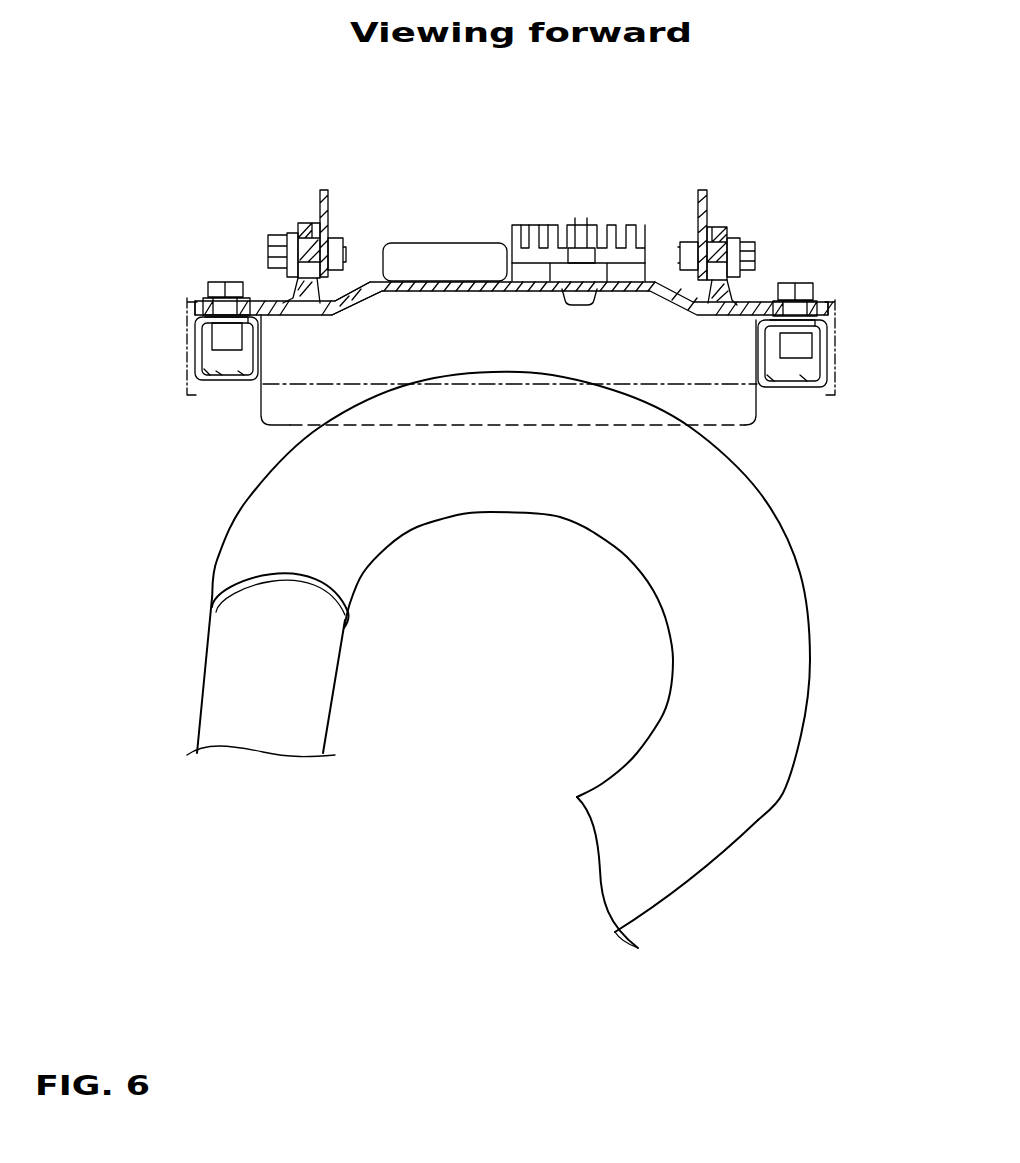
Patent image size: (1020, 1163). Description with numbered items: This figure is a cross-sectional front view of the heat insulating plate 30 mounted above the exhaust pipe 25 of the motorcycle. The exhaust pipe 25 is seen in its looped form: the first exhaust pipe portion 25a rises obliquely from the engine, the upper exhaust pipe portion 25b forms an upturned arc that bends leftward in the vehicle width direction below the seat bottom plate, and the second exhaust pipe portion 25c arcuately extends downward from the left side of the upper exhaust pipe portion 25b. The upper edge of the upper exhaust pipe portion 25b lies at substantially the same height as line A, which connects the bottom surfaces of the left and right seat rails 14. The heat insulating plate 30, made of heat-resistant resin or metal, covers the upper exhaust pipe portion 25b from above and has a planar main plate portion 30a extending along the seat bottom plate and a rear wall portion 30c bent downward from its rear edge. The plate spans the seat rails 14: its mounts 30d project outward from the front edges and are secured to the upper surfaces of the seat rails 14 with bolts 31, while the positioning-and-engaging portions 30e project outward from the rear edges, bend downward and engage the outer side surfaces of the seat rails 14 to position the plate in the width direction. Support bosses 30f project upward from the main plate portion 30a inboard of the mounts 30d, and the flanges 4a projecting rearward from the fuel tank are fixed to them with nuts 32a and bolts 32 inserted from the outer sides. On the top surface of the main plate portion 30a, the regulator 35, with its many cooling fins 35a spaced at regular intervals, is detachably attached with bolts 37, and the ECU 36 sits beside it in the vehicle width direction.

The exhaust pipe 25 is at (832, 661).
The first exhaust pipe portion 25a is at (203, 700).
The upper exhaust pipe portion 25b is at (592, 384).
The second exhaust pipe portion 25c is at (758, 823).
The heat insulating plate 30 is at (466, 292).
The main plate portion 30a is at (374, 255).
The rear wall portion 30c is at (285, 415).
The mount 30d is at (248, 280).
The positioning-and-engaging portion 30e is at (187, 339).
The support boss 30f is at (305, 223).
The flange 4a is at (325, 190).
The bolt 32 is at (268, 250).
The nut 32a is at (334, 238).
The bolt 31 is at (212, 283).
The seat rail 14 is at (213, 390).
The ECU 36 is at (457, 242).
The regulator 35 is at (620, 224).
The cooling fin 35a is at (578, 227).
The bolt 37 is at (581, 220).
The line A is at (283, 382).